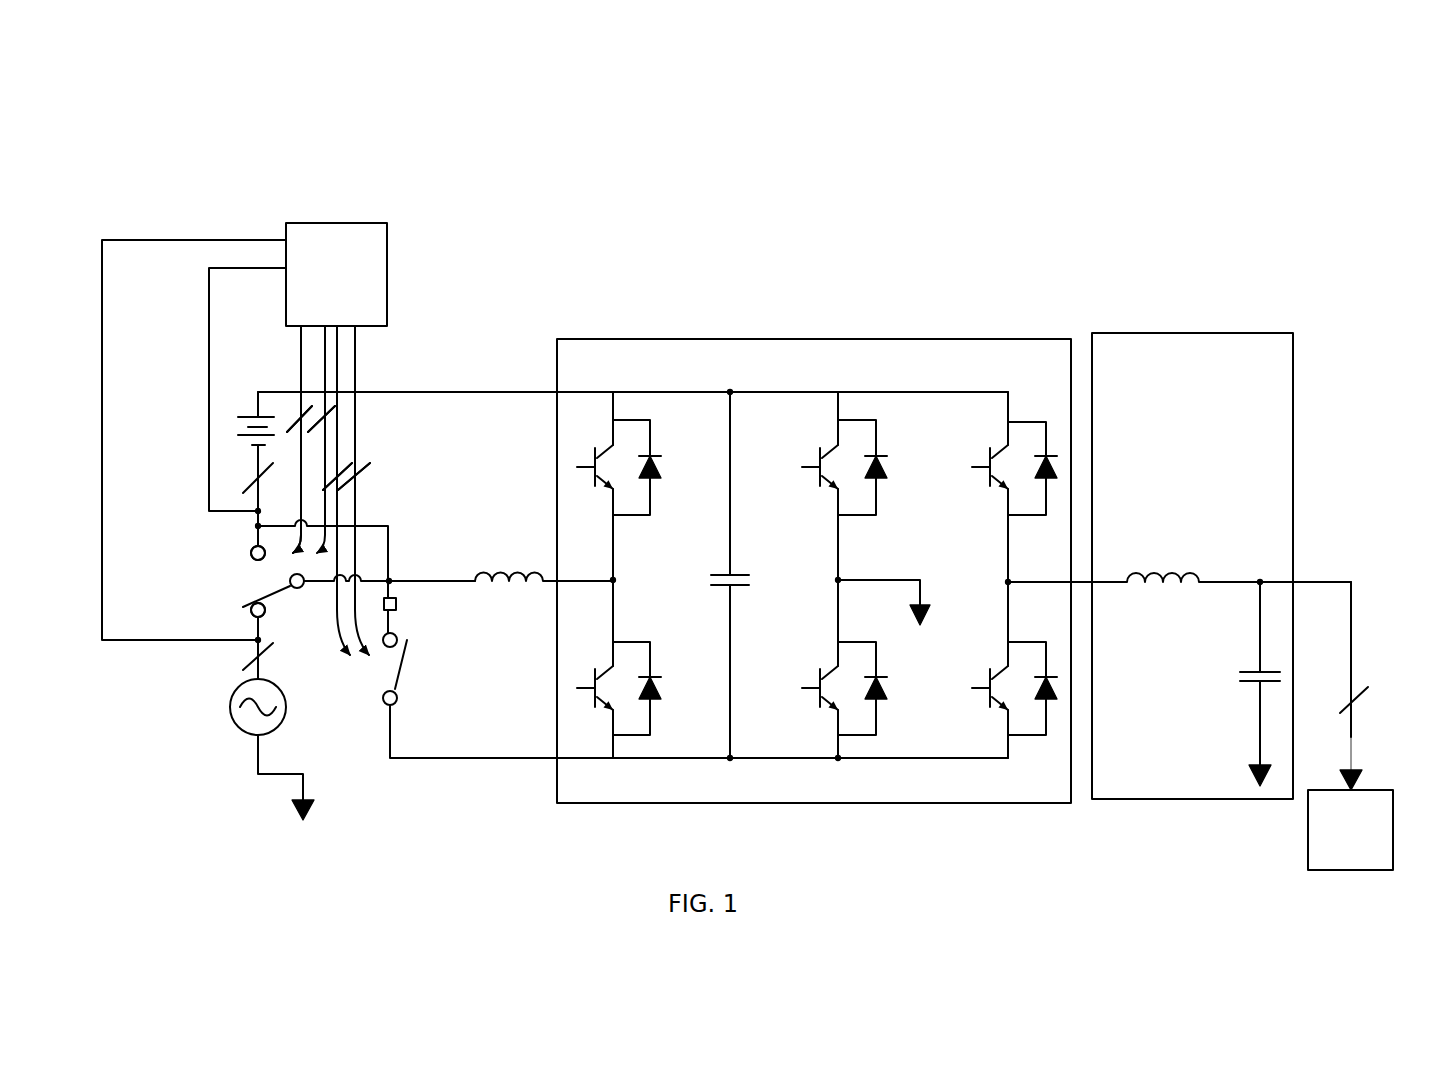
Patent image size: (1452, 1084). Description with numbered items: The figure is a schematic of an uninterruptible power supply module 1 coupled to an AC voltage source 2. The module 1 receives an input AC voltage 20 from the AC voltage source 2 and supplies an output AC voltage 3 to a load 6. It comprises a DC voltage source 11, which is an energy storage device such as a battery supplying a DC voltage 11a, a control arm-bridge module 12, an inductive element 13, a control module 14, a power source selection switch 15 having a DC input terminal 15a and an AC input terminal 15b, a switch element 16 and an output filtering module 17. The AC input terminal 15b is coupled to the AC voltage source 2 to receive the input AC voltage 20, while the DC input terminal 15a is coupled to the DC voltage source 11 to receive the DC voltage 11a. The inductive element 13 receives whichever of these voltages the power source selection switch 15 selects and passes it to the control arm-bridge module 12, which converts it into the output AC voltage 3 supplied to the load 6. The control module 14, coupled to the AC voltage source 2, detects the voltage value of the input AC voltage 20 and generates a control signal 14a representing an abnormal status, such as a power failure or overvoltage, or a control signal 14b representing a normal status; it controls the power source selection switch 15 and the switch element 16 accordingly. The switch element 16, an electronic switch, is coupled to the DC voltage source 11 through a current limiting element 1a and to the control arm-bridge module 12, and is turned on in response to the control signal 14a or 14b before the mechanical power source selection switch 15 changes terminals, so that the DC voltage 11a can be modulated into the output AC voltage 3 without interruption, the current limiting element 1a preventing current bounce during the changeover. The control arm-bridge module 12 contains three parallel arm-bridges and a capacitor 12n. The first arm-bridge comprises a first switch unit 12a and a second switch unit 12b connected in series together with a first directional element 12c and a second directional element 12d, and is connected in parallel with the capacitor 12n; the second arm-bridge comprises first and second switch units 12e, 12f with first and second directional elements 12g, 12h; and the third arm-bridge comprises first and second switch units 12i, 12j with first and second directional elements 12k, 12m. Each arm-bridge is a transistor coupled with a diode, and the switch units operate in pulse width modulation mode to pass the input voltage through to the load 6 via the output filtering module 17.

The uninterruptible power supply module 1 is at (700, 122).
The current limiting element 1a is at (398, 605).
The AC voltage source 2 is at (236, 718).
The output AC voltage 3 is at (1352, 708).
The load 6 is at (1395, 830).
The DC voltage source 11 is at (236, 435).
The DC voltage 11a is at (256, 482).
The control arm-bridge module 12 is at (777, 551).
The first switch unit 12a is at (580, 443).
The second switch unit 12b is at (580, 684).
The first directional element 12c is at (712, 460).
The second directional element 12d is at (700, 670).
The first switch unit 12e is at (800, 450).
The second switch unit 12f is at (800, 690).
The first directional element 12g is at (884, 486).
The second directional element 12h is at (892, 710).
The first switch unit 12i is at (978, 476).
The second switch unit 12j is at (978, 690).
The first directional element 12k is at (1060, 442).
The second directional element 12m is at (1062, 676).
The capacitor 12n is at (712, 572).
The inductive element 13 is at (508, 546).
The control module 14 is at (340, 223).
The control signal 14a is at (308, 428).
The control signal 14b is at (310, 425).
The power source selection switch 15 is at (240, 603).
The DC input terminal 15a is at (246, 552).
The AC input terminal 15b is at (251, 614).
The switch element 16 is at (366, 688).
The output filtering module 17 is at (1147, 333).
The input AC voltage 20 is at (268, 655).